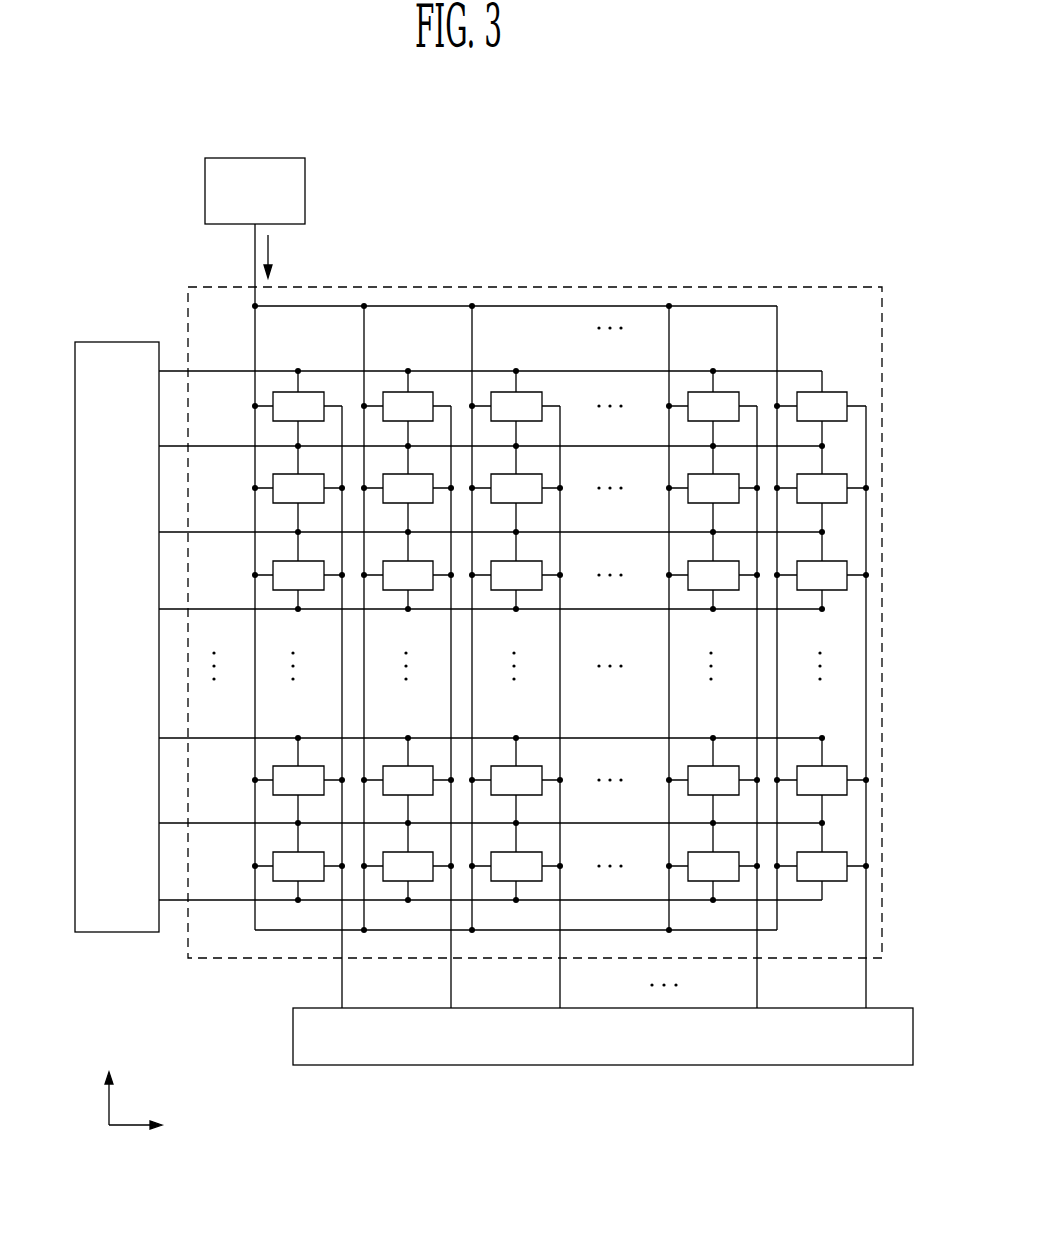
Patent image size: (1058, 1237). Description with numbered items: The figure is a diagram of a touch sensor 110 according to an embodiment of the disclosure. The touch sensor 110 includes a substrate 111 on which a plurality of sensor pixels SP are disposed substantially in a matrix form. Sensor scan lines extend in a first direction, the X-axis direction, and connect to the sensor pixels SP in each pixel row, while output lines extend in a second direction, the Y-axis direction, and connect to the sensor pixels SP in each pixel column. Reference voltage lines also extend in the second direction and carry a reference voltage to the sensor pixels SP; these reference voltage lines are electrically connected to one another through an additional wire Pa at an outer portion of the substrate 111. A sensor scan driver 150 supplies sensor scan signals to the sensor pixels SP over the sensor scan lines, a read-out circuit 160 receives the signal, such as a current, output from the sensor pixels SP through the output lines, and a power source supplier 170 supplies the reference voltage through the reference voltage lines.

The touch sensor 110 is at (663, 146).
The substrate 111 is at (752, 287).
The sensor scan driver 150 is at (118, 341).
The read-out circuit 160 is at (688, 1066).
The power source supplier 170 is at (305, 188).
The sensor pixel SP is at (847, 392).
The additional wire Pa is at (272, 932).